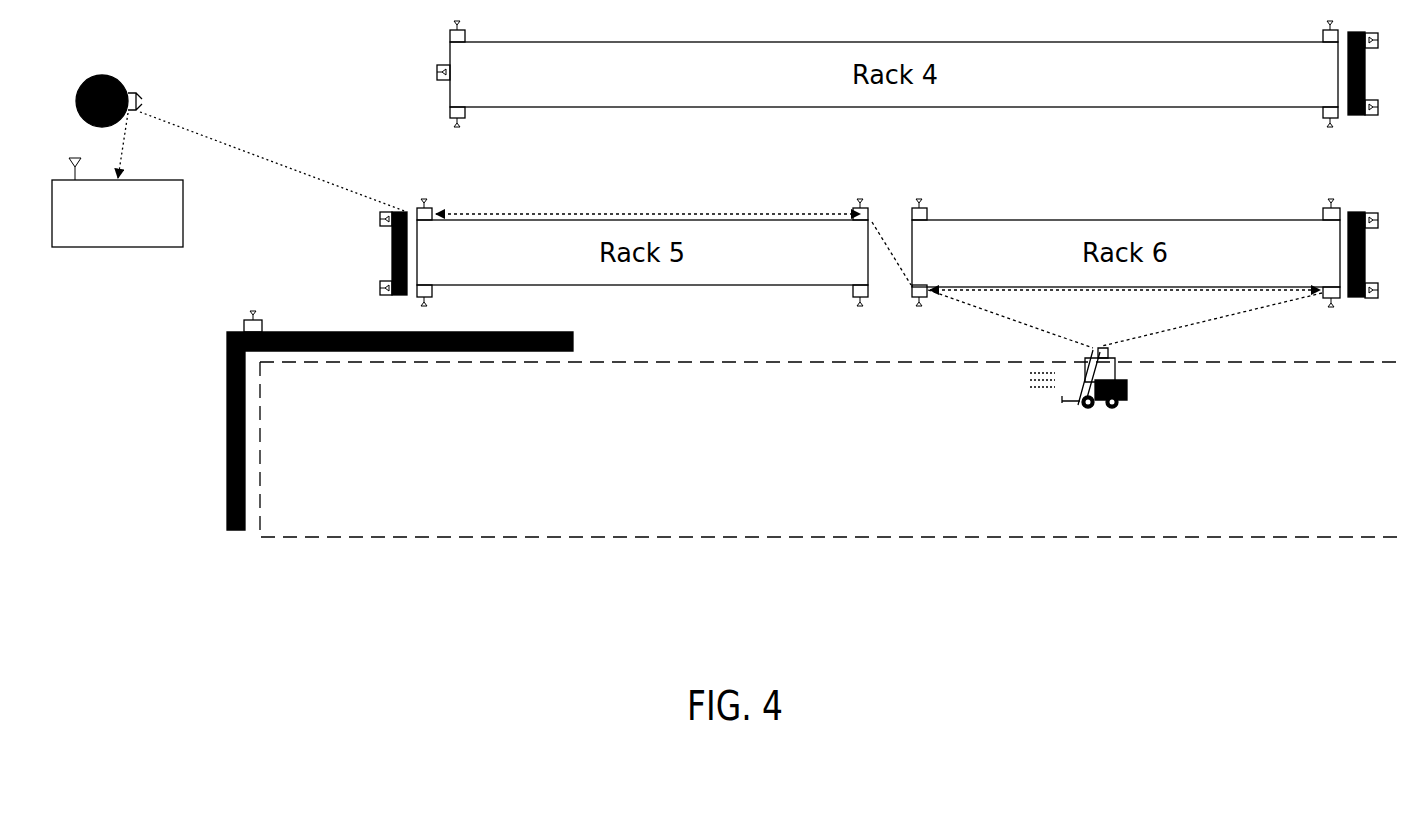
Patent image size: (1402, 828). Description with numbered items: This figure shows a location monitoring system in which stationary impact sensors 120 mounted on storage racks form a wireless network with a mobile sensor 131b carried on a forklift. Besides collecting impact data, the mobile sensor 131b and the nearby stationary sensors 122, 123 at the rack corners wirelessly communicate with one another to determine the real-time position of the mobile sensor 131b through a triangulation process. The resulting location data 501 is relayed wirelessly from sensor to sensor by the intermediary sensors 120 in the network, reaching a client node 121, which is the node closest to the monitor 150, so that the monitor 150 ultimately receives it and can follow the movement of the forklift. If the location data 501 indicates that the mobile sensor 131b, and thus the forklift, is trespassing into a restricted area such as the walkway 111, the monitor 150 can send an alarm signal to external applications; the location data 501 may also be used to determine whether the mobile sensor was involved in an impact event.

The walkway 111 is at (787, 361).
The stationary impact sensors 120 is at (866, 217).
The client node 121 is at (140, 97).
The stationary sensor 122 is at (912, 292).
The stationary sensor 123 is at (1323, 293).
The mobile sensor 131b is at (1108, 348).
The monitor 150 is at (183, 207).
The location data 501 is at (890, 247).